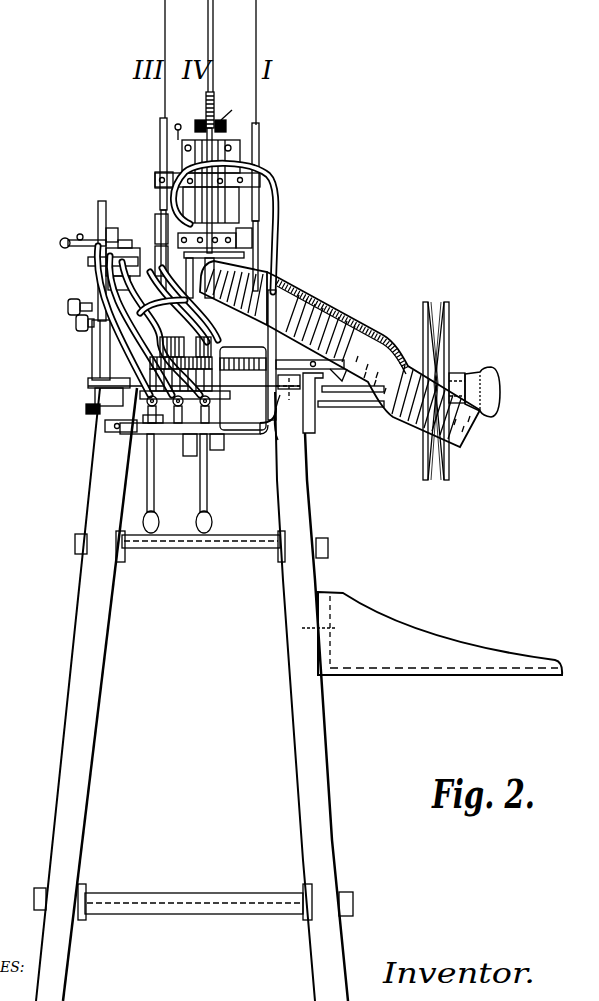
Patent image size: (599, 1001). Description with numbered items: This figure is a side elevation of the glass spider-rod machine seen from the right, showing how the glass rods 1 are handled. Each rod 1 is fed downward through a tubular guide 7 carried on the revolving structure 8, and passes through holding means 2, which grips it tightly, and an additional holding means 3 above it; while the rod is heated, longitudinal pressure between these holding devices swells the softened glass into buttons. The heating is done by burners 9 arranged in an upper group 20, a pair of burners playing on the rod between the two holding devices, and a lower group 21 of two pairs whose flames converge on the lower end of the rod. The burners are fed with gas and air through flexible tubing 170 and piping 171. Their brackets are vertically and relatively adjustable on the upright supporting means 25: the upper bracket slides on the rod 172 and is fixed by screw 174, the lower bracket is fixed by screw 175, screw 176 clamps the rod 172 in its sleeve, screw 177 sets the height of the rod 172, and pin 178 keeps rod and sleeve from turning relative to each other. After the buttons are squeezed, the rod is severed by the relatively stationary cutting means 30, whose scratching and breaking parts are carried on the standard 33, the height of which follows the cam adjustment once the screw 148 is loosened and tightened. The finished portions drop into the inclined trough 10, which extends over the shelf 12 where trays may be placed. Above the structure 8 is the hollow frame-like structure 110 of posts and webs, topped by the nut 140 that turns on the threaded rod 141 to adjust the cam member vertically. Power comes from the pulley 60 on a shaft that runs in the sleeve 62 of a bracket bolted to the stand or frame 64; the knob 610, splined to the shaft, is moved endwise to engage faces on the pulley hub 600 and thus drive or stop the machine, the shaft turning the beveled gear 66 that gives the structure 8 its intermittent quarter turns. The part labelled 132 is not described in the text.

The glass rod 1 is at (164, 9).
The holding means 2 is at (156, 256).
The additional holding means 3 is at (155, 222).
The guide 7 is at (160, 131).
The structure 8 is at (184, 140).
The heating device 9 is at (112, 228).
The inclined trough 10 is at (312, 301).
The shelf 12 is at (502, 656).
The upper group of heating devices 20 is at (55, 240).
The lower group of heating devices 21 is at (98, 281).
The upright supporting means 25 is at (96, 335).
The cutting means 30 is at (244, 257).
The supporting member or standard 33 is at (224, 410).
The pulley 60 is at (450, 320).
The sleeve 62 is at (343, 408).
The stand or supporting frame 64 is at (310, 496).
The beveled gear 66 is at (243, 388).
The frame-like structure 110 is at (176, 158).
The cross plate 132 is at (154, 181).
The nut 140 is at (204, 124).
The threaded rod 141 is at (215, 104).
The screw 148 is at (212, 325).
The flexible tubing 170 is at (88, 261).
The piping 171 is at (154, 479).
The rod 172 is at (98, 205).
The screw 174 is at (81, 235).
The screw 175 is at (68, 307).
The screw 176 is at (76, 323).
The screw 177 is at (86, 410).
The pin 178 is at (92, 352).
The hub 600 is at (457, 380).
The knob 610 is at (502, 379).